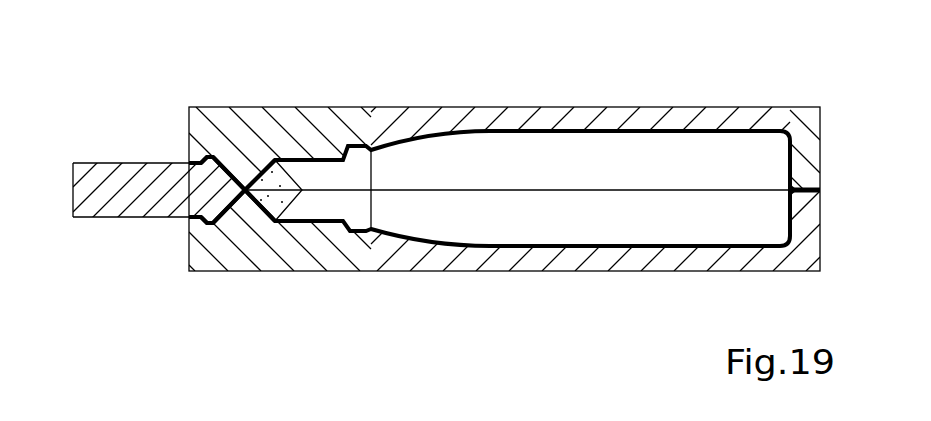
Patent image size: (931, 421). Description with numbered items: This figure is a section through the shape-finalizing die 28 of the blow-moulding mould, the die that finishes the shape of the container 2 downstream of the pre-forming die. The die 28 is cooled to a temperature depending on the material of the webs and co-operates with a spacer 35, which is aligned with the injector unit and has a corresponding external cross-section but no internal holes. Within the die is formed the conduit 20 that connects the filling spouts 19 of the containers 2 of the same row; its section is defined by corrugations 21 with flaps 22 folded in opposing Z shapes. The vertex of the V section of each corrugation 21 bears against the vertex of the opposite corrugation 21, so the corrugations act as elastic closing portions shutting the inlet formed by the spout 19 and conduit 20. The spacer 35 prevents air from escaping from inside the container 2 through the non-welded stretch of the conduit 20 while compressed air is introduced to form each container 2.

The container 2 is at (713, 131).
The filling spout 19 is at (323, 164).
The conduit 20 is at (281, 199).
The corrugation 21 is at (259, 172).
The flap 22 is at (222, 160).
The shape-finalizing die 28 is at (490, 285).
The spacer 35 is at (93, 235).